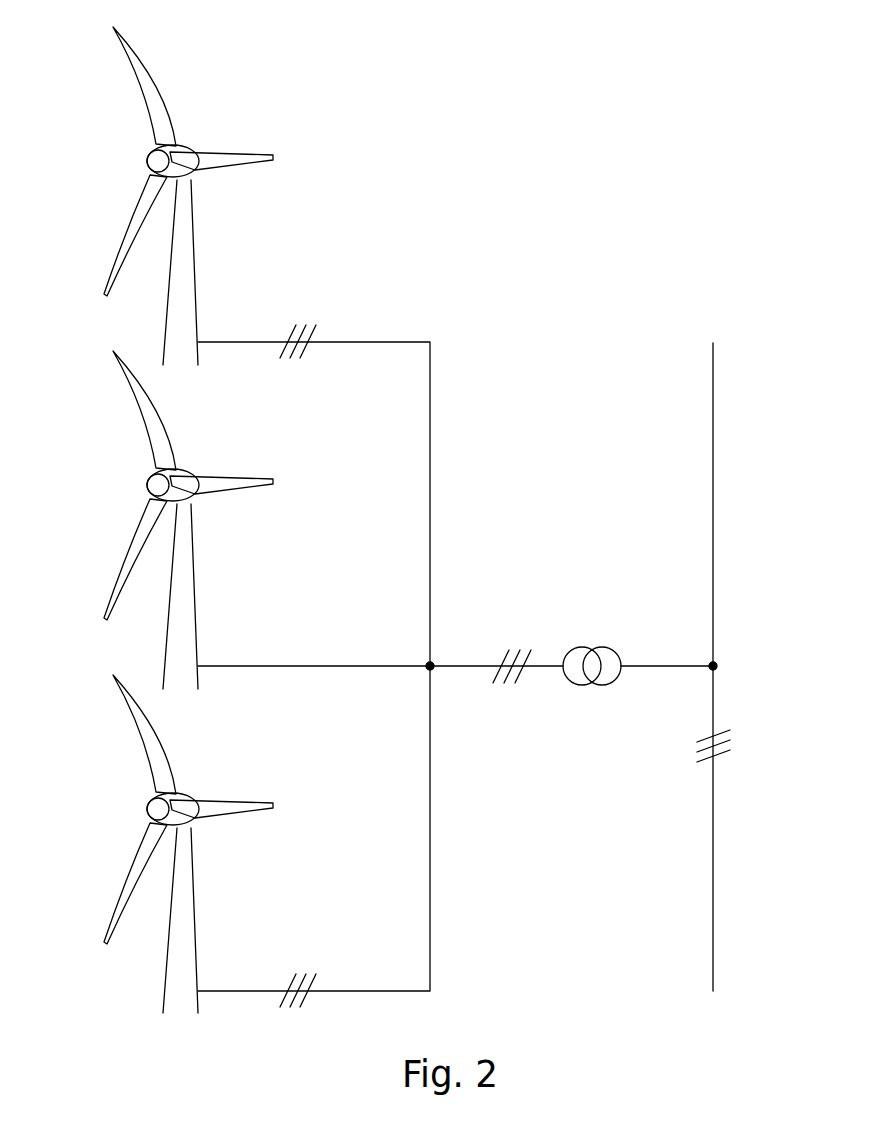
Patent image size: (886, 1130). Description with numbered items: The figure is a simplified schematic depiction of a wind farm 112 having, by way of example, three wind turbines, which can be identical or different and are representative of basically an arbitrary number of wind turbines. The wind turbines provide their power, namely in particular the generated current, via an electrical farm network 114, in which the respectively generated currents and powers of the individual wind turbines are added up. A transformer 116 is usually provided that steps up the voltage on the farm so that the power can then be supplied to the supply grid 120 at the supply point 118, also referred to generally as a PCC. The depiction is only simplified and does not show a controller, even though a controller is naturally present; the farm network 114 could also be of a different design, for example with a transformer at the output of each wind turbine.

The wind farm 112 is at (508, 162).
The electrical farm network 114 is at (453, 666).
The transformer 116 is at (596, 641).
The supply point 118 is at (722, 650).
The supply grid 120 is at (713, 378).